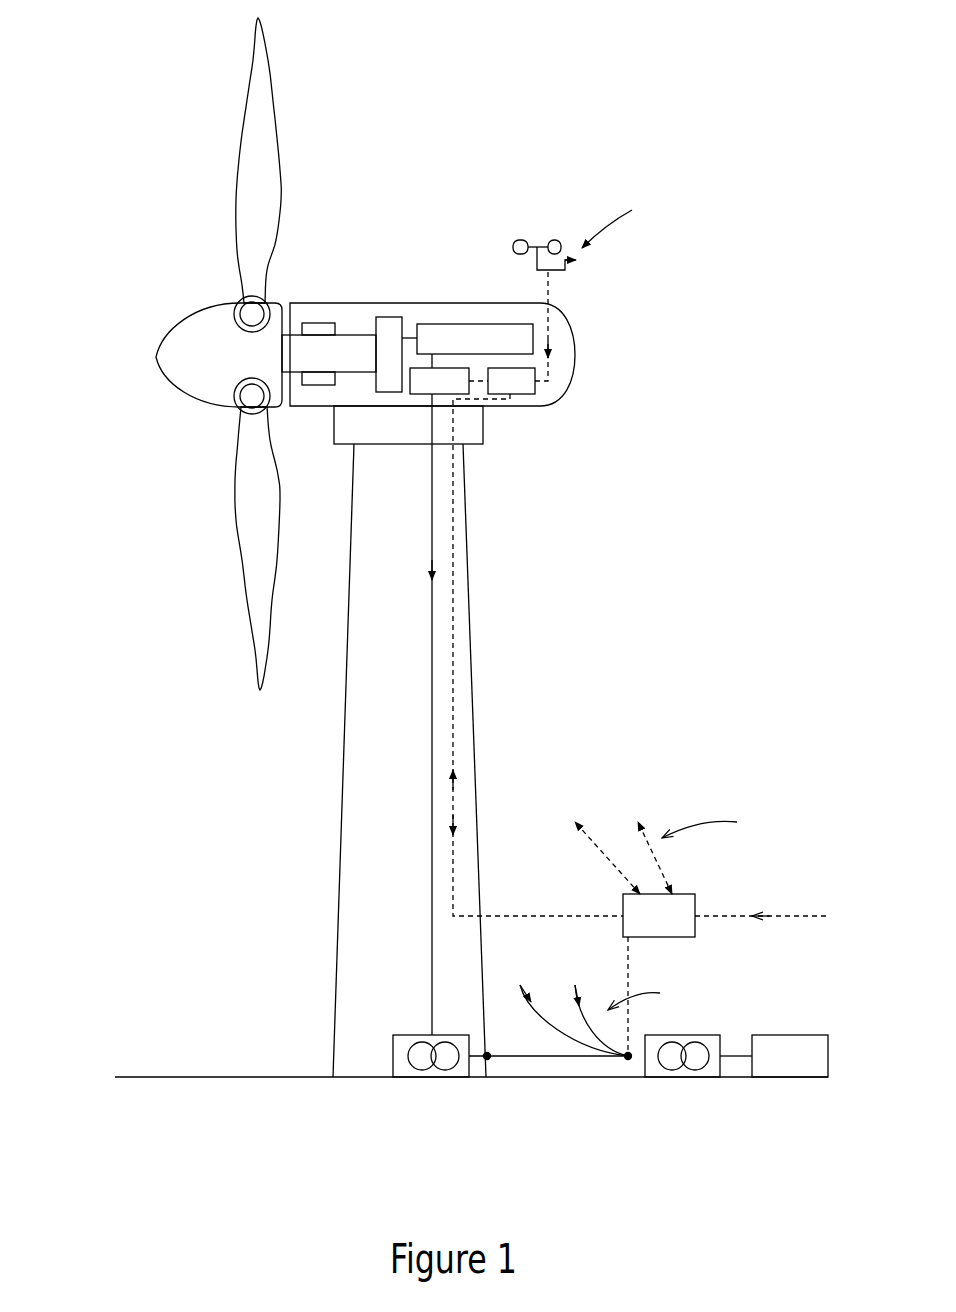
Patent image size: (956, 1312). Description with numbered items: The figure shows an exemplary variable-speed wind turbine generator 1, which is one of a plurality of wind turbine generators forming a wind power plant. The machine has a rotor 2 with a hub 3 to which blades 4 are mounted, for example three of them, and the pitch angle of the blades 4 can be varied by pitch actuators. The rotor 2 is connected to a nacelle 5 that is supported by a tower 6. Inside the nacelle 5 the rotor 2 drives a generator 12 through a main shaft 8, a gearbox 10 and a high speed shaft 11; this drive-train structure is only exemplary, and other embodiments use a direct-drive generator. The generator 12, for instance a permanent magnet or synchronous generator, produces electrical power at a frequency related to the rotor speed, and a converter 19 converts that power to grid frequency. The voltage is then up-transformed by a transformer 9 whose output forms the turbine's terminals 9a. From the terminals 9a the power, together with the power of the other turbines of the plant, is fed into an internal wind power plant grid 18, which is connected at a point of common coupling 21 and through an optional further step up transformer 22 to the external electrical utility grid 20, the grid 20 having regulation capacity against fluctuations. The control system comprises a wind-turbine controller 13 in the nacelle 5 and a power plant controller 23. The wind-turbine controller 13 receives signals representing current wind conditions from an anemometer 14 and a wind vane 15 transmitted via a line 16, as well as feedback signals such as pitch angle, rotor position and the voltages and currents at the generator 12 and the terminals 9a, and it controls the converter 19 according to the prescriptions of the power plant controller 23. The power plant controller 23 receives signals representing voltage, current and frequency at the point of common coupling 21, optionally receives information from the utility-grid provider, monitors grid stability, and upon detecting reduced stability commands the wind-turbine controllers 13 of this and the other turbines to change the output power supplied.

The wind turbine generator 1 is at (428, 147).
The rotor 2 is at (163, 165).
The hub 3 is at (158, 364).
The blades 4 is at (274, 128).
The nacelle 5 is at (315, 303).
The tower 6 is at (341, 830).
The main shaft 8 is at (350, 335).
The transformer 9 is at (400, 1035).
The terminals 9a is at (489, 1060).
The gearbox 10 is at (384, 317).
The high speed shaft 11 is at (414, 338).
The generator 12 is at (470, 325).
The wind-turbine controller 13 is at (535, 391).
The anemometer 14 is at (553, 240).
The wind vane 15 is at (624, 216).
The line 16 is at (548, 333).
The wind power plant grid 18 is at (556, 1060).
The converter 19 is at (410, 394).
The electrical utility grid 20 is at (793, 1078).
The point of common coupling 21 is at (628, 1062).
The step up transformer 22 is at (710, 1066).
The power plant controller 23 is at (695, 900).